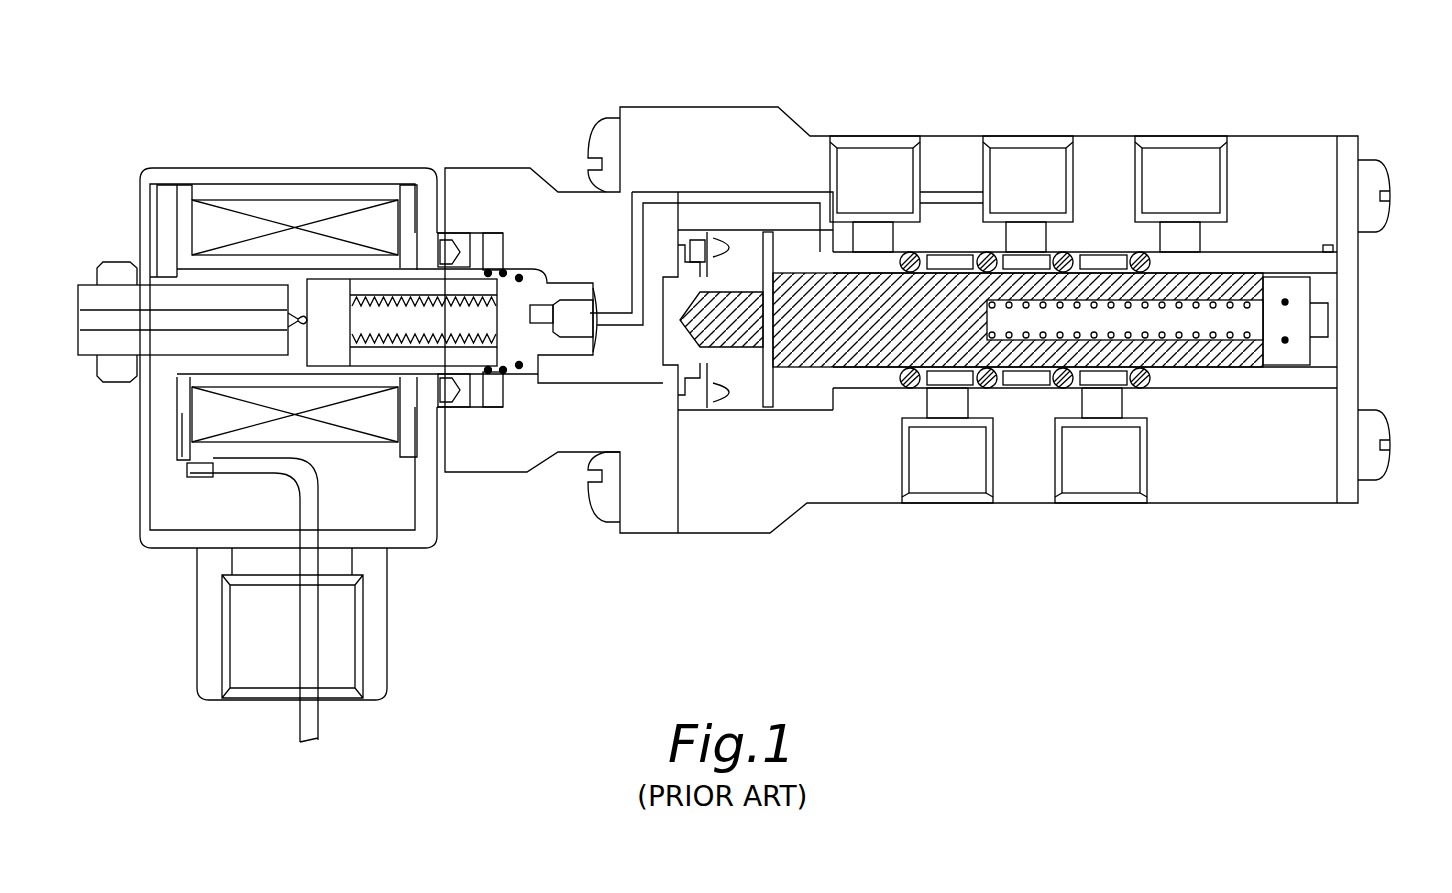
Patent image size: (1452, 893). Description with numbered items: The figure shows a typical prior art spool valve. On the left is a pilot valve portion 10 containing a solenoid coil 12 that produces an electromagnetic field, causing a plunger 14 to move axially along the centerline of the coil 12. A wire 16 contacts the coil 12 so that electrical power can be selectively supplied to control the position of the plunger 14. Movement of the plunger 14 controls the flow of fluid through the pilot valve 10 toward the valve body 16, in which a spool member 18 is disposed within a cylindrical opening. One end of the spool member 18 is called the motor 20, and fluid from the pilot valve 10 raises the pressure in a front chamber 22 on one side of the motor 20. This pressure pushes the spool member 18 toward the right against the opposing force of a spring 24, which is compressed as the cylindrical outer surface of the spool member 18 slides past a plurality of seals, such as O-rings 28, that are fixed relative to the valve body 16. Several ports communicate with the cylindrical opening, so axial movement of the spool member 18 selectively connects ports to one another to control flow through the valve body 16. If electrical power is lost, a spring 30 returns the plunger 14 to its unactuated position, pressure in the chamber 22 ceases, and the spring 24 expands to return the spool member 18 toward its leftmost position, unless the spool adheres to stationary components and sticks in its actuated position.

The pilot valve portion 10 is at (325, 167).
The solenoid coil 12 is at (278, 210).
The plunger 14 is at (367, 300).
The wire / valve body 16 is at (731, 123).
The spool member 18 is at (857, 287).
The motor 20 is at (680, 348).
The front chamber 22 is at (693, 250).
The spring 24 is at (1257, 293).
The O-rings 28 is at (837, 382).
The spring 30 is at (510, 270).